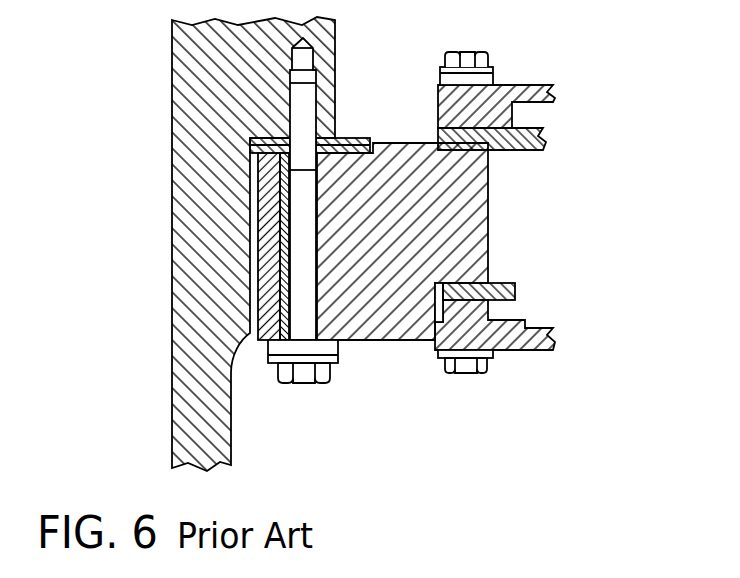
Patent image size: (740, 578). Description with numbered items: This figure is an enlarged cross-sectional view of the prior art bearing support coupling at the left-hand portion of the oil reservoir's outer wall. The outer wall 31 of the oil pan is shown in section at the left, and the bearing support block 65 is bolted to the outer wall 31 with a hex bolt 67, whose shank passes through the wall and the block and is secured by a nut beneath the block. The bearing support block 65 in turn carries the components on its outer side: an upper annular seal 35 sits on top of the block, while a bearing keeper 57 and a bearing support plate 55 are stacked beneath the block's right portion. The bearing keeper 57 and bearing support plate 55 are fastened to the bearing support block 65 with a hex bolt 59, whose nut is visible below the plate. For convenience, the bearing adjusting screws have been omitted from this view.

The outer wall 31 is at (172, 408).
The upper annular seal 35 is at (507, 83).
The bearing support plate 55 is at (530, 350).
The bearing keeper 57 is at (497, 282).
The hex bolt 59 is at (473, 373).
The bearing support block 65 is at (373, 342).
The hex bolt 67 is at (300, 385).